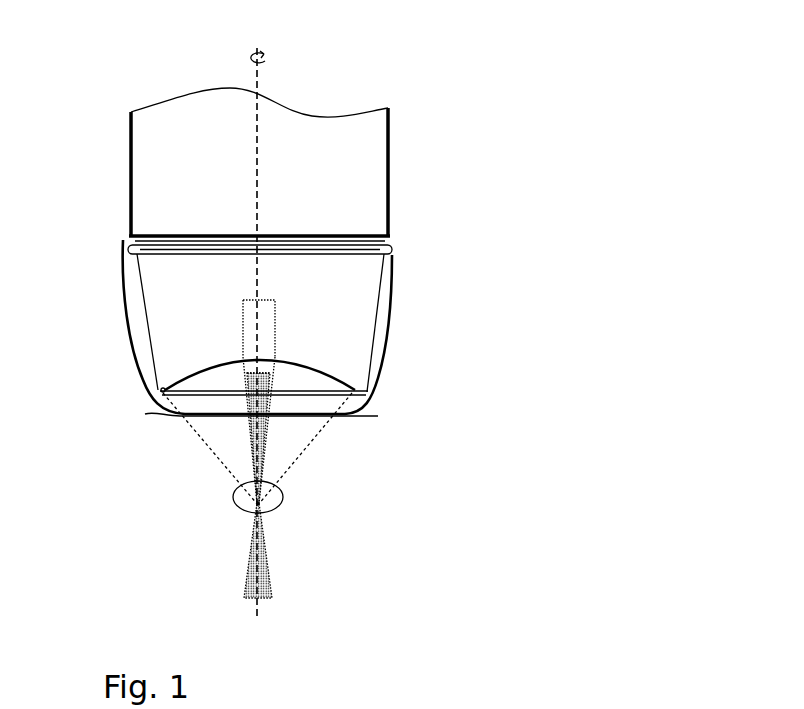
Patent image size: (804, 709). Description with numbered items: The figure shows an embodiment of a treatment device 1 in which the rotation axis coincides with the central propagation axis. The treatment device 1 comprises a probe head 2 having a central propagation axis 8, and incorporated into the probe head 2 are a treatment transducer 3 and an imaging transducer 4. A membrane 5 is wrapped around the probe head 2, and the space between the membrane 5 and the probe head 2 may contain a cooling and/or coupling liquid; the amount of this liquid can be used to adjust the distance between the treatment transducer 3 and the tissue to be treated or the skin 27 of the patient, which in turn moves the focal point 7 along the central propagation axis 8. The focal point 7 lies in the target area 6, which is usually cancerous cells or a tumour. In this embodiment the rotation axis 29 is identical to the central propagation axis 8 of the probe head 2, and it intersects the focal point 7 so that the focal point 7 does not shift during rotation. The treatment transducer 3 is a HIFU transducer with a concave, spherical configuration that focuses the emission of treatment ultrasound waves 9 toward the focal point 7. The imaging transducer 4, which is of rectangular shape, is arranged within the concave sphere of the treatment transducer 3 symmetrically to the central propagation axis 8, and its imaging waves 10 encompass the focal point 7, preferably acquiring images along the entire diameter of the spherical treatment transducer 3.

The treatment device 1 is at (388, 182).
The probe head 2 is at (385, 306).
The treatment transducer 3 is at (342, 384).
The imaging transducer 4 is at (243, 322).
The membrane 5 is at (133, 343).
The target area 6 is at (283, 497).
The focal point 7 is at (250, 508).
The central propagation axis 8 is at (260, 85).
The rotation axis 29 is at (258, 57).
The treatment ultrasound waves 9 is at (205, 447).
The imaging waves 10 is at (267, 447).
The skin 27 is at (368, 414).